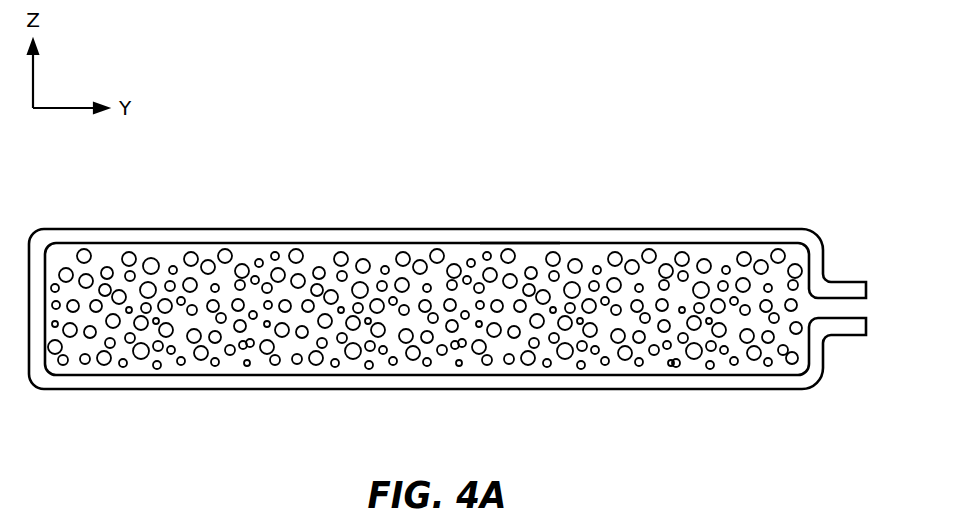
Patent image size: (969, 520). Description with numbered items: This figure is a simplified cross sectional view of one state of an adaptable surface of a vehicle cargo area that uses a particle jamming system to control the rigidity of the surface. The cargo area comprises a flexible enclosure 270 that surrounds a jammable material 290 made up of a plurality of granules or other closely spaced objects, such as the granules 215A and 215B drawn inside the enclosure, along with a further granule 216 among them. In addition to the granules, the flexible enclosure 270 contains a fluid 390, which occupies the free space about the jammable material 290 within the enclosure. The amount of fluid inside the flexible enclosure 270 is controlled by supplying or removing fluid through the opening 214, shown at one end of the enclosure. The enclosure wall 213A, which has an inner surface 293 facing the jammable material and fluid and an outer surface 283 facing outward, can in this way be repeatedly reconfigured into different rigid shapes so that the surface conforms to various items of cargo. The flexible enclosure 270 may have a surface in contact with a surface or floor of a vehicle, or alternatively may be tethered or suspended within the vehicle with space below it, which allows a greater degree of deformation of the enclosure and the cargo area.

The flexible enclosure 270 is at (457, 236).
The outer surface 283 is at (706, 229).
The inner surface 293 is at (631, 243).
The enclosure wall 213A is at (515, 242).
The opening 214 is at (842, 300).
The jammable material 290 is at (530, 374).
The fluid 390 is at (693, 371).
The granule 215A is at (62, 348).
The granule 215B is at (85, 362).
The particle 216 is at (228, 360).